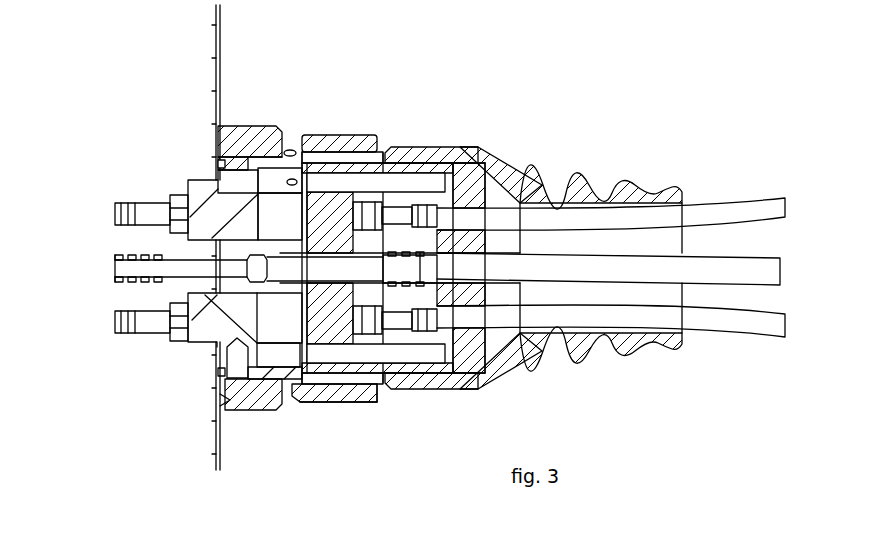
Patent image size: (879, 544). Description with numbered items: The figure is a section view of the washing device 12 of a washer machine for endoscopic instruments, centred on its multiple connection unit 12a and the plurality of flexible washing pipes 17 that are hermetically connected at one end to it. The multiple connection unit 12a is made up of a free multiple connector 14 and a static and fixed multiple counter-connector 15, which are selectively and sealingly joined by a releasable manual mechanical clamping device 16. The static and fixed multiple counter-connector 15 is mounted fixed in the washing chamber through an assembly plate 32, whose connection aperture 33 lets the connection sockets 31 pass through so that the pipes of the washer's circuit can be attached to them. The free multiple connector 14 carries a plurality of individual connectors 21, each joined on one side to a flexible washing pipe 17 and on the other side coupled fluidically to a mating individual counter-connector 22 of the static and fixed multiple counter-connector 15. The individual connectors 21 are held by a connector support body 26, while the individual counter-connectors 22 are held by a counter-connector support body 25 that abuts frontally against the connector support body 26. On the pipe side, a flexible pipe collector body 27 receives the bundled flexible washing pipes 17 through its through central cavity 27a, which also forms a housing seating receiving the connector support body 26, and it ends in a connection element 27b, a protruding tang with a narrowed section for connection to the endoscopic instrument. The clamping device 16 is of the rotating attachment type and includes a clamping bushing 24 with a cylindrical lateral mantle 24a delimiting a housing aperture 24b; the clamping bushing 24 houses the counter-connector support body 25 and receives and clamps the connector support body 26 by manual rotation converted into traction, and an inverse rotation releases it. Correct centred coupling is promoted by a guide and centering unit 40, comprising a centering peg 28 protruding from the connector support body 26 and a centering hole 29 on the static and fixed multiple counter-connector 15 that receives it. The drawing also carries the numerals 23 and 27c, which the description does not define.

The washing device 12 is at (88, 122).
The multiple connection unit 12a is at (428, 113).
The free multiple connector 14 is at (395, 138).
The static and fixed multiple counter-connector 15 is at (256, 120).
The releasable manual mechanical clamping device 16 is at (372, 408).
The flexible washing pipes 17 is at (733, 216).
The individual connectors 21 is at (402, 215).
The individual counter-connectors 22 is at (135, 214).
The seal 23 is at (222, 401).
The clamping bushing 24 is at (255, 400).
The lateral mantle 24a is at (340, 135).
The housing aperture 24b is at (314, 386).
The counter-connector support body 25 is at (280, 374).
The connector support body 26 is at (333, 356).
The flexible pipe collector body 27 is at (408, 384).
The through central cavity 27a is at (602, 207).
The connection element 27b is at (487, 162).
The lower corrugated sleeve portion 27c is at (630, 342).
The centering peg 28 is at (352, 184).
The centering hole 29 is at (330, 174).
The connection sockets 31 is at (203, 213).
The assembly plate 32 is at (215, 56).
The connection aperture 33 is at (217, 198).
The guide and centering unit 40 is at (328, 122).